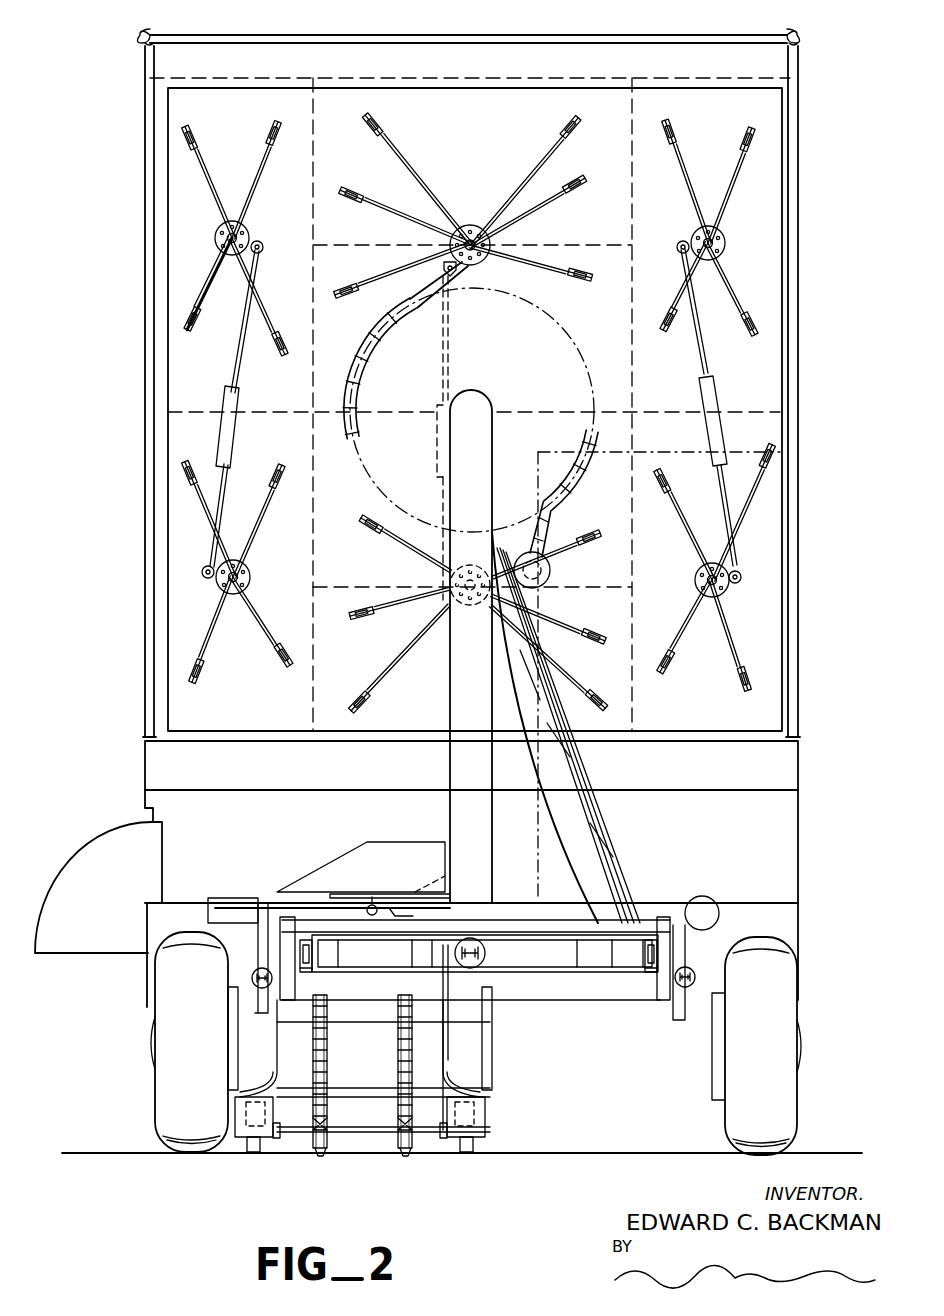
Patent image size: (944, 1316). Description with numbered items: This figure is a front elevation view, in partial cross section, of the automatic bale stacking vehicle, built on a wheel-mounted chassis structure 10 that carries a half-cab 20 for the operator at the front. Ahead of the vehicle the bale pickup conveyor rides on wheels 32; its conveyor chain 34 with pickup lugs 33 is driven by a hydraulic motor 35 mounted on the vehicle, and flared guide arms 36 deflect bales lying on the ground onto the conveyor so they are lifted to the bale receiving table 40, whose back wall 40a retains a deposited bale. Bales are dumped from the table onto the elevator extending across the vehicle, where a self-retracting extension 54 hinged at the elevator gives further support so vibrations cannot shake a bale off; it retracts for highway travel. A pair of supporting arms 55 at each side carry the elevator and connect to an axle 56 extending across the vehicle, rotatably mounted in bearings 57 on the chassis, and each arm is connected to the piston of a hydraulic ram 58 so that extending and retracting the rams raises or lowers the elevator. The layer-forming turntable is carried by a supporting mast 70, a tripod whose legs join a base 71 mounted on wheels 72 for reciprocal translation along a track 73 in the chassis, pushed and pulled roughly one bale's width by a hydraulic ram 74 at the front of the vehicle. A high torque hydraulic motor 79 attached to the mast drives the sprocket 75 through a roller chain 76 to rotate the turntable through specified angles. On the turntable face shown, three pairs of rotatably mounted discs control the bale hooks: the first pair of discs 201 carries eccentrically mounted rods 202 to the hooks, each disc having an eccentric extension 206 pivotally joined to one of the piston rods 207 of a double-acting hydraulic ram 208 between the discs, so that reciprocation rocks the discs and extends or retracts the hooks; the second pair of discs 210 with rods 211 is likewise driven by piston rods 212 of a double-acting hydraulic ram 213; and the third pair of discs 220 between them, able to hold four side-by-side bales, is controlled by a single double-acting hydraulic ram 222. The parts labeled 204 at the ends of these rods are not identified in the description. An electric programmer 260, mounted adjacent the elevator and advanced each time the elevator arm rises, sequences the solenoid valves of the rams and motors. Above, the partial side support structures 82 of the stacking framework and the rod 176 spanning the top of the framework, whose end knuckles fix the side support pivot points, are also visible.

The wheel-mounted chassis structure 10 is at (840, 862).
The half-cab 20 is at (780, 450).
The wheels 32 is at (260, 1154).
The pickup lugs 33 is at (322, 1154).
The conveyor chain 34 is at (395, 1057).
The hydraulic motor 35 is at (225, 904).
The flared guide arms 36 is at (235, 1111).
The bale receiving table 40 is at (280, 889).
The back wall 40a is at (384, 849).
The self-retracting extension 54 is at (87, 857).
The supporting arms 55 is at (264, 1009).
The axle 56 is at (554, 918).
The bearings 57 is at (663, 914).
The hydraulic ram 58 is at (257, 973).
The supporting mast 70 is at (450, 698).
The base 71 is at (576, 963).
The wheels 72 is at (312, 953).
The track 73 is at (308, 970).
The hydraulic ram 74 is at (476, 968).
The sprocket 75 is at (542, 376).
The roller chain 76 is at (562, 512).
The high torque hydraulic motor 79 is at (552, 572).
The side support structure 82 is at (800, 333).
The rod 176 is at (635, 43).
The first pair of discs 201 is at (217, 231).
The eccentrically mounted rods 202 is at (266, 165).
The tine 204 is at (282, 122).
The eccentric extension 206 is at (260, 244).
The piston rods 207 is at (236, 362).
The double-acting hydraulic ram 208 is at (231, 431).
The second pair of discs 210 is at (722, 240).
The eccentrically mounted rods 211 is at (730, 178).
The piston rods 212 is at (701, 358).
The double-acting hydraulic ram 213 is at (705, 432).
The third pair of discs 220 is at (473, 223).
The double-acting hydraulic ram 222 is at (437, 440).
The electric programmer 260 is at (712, 899).